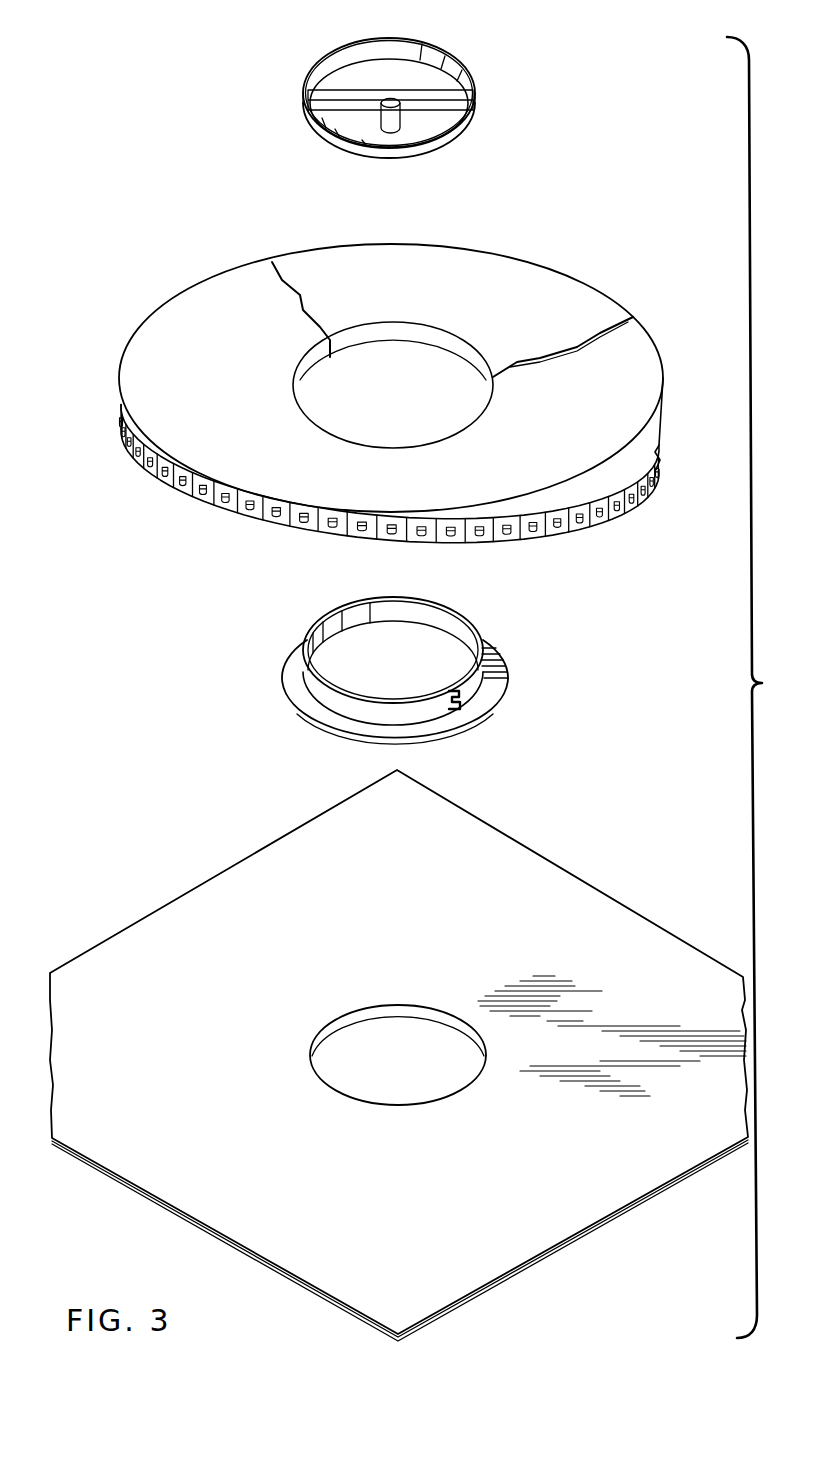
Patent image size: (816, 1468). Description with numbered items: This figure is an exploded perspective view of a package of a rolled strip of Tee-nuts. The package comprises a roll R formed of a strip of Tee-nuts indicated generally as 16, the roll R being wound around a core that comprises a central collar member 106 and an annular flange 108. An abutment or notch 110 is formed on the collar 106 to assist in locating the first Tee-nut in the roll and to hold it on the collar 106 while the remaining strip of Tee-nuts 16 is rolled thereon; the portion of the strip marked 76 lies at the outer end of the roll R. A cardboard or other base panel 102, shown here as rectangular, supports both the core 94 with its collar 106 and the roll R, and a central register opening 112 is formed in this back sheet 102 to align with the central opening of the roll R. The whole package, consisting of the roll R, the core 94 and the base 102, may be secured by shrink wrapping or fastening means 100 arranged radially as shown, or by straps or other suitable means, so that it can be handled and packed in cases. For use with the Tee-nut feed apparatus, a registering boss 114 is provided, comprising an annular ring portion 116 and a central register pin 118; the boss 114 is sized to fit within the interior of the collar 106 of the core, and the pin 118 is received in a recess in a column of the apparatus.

The registering boss 114 is at (454, 86).
The annular ring portion 116 is at (472, 71).
The central register pin 118 is at (401, 116).
The roll R is at (415, 381).
The fastening means 100 is at (383, 277).
The Tee-nuts 16 is at (618, 493).
The tape end 76 is at (648, 452).
The hub ring 94 is at (383, 663).
The central collar member 106 is at (457, 611).
The annular flange 108 is at (483, 668).
The abutment or notch 110 is at (457, 703).
The base panel 102 is at (399, 1055).
The central register opening 112 is at (365, 1003).